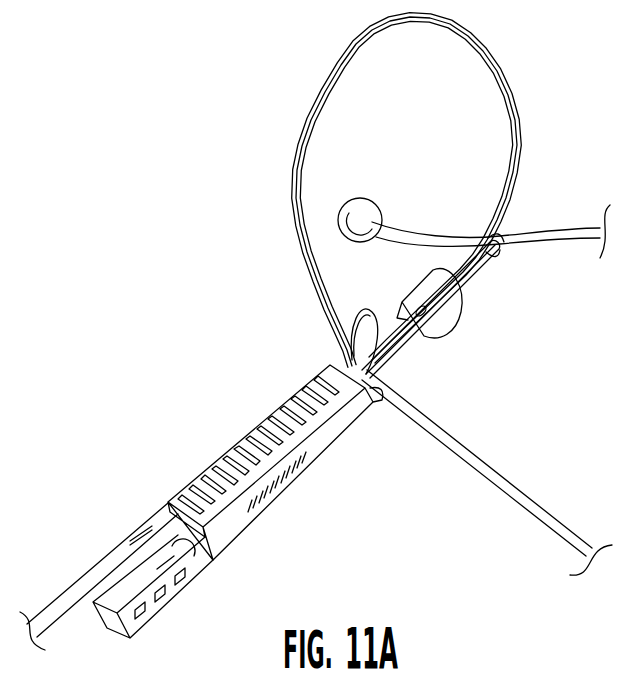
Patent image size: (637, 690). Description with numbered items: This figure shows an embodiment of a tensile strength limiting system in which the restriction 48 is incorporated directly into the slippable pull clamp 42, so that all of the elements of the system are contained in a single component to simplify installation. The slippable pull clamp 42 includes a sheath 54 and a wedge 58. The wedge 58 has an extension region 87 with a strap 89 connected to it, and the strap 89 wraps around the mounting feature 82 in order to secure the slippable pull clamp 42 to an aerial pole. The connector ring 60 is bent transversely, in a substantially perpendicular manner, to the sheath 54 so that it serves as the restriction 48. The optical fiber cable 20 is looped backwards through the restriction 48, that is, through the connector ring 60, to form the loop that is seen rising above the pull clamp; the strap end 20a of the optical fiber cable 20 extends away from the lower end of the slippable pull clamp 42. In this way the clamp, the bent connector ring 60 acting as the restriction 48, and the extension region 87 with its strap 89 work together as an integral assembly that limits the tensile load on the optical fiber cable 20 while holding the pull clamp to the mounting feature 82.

The optical fiber cable 20 is at (343, 58).
The strap end 20a is at (72, 594).
The slippable pull clamp 42 is at (222, 460).
The restriction 48 is at (354, 300).
The connector ring 60 is at (362, 335).
The sheath 54 is at (253, 510).
The wedge 58 is at (172, 588).
The mounting feature 82 is at (567, 224).
The extension region 87 is at (450, 318).
The strap 89 is at (498, 258).